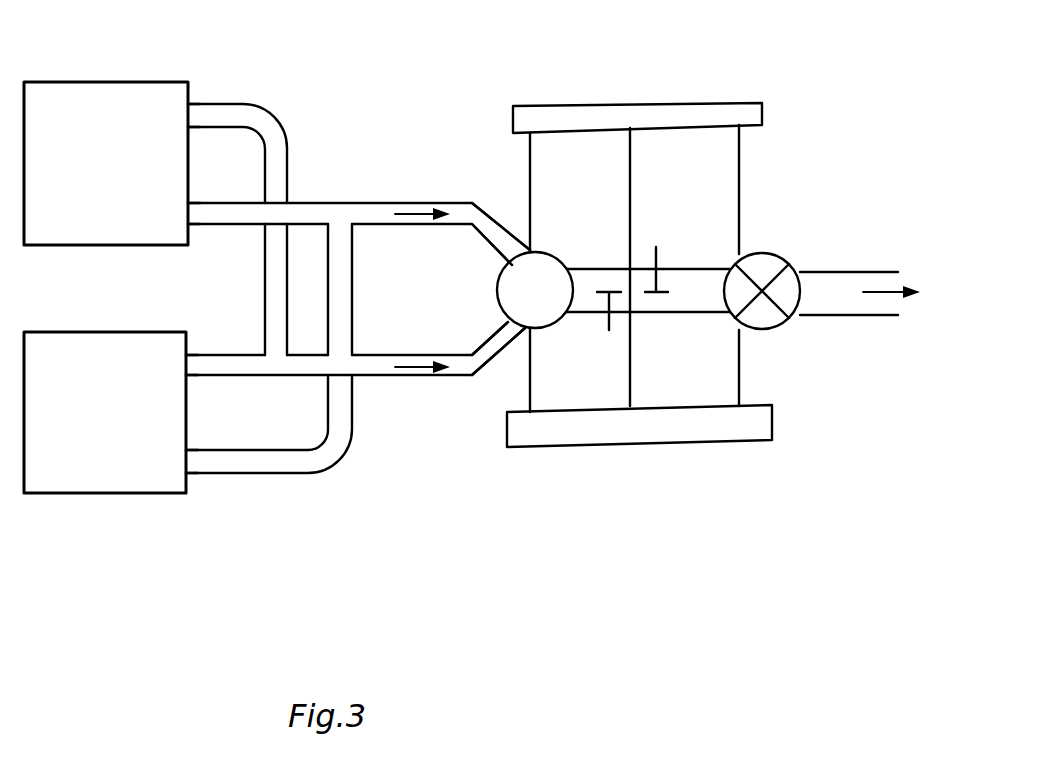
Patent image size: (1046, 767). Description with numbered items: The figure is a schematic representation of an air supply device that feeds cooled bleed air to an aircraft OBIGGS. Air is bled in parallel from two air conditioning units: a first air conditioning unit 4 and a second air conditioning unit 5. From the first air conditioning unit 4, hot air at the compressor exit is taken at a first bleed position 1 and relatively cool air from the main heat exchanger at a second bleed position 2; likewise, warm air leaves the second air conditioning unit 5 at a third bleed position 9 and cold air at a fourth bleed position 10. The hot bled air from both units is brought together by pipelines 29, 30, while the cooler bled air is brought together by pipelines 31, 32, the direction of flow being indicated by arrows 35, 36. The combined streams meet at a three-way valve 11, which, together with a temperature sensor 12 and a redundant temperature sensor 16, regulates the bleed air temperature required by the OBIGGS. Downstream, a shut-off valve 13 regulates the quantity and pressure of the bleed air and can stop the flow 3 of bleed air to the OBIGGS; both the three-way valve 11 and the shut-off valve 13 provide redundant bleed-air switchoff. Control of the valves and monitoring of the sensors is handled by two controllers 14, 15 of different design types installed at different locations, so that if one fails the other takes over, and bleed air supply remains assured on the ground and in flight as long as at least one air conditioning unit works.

The first bleed position 1 is at (190, 100).
The second bleed position 2 is at (195, 200).
The flow of bleed air 3 is at (893, 290).
The first air conditioning unit 4 is at (98, 94).
The second air conditioning unit 5 is at (122, 478).
The third bleed position 9 is at (188, 370).
The fourth bleed position 10 is at (190, 450).
The three-way valve 11 is at (543, 264).
The temperature sensor 12 is at (659, 262).
The shut-off valve 13 is at (773, 288).
The controller 14 is at (700, 116).
The controller 15 is at (648, 430).
The temperature sensor 16 is at (609, 325).
The pipeline 29 is at (277, 128).
The pipeline 30 is at (250, 366).
The pipeline 31 is at (300, 212).
The pipeline 32 is at (313, 463).
The arrow 35 is at (413, 212).
The arrow 36 is at (411, 367).